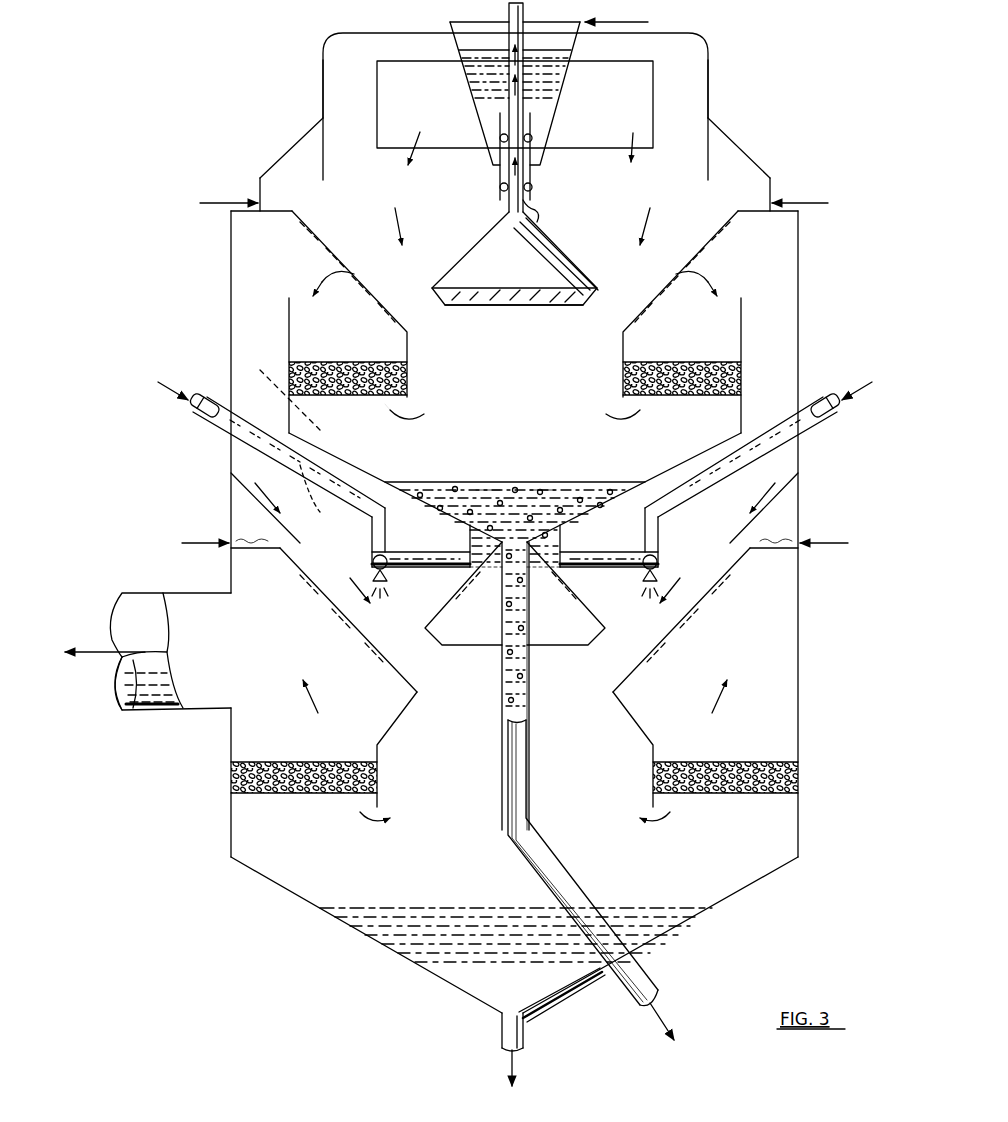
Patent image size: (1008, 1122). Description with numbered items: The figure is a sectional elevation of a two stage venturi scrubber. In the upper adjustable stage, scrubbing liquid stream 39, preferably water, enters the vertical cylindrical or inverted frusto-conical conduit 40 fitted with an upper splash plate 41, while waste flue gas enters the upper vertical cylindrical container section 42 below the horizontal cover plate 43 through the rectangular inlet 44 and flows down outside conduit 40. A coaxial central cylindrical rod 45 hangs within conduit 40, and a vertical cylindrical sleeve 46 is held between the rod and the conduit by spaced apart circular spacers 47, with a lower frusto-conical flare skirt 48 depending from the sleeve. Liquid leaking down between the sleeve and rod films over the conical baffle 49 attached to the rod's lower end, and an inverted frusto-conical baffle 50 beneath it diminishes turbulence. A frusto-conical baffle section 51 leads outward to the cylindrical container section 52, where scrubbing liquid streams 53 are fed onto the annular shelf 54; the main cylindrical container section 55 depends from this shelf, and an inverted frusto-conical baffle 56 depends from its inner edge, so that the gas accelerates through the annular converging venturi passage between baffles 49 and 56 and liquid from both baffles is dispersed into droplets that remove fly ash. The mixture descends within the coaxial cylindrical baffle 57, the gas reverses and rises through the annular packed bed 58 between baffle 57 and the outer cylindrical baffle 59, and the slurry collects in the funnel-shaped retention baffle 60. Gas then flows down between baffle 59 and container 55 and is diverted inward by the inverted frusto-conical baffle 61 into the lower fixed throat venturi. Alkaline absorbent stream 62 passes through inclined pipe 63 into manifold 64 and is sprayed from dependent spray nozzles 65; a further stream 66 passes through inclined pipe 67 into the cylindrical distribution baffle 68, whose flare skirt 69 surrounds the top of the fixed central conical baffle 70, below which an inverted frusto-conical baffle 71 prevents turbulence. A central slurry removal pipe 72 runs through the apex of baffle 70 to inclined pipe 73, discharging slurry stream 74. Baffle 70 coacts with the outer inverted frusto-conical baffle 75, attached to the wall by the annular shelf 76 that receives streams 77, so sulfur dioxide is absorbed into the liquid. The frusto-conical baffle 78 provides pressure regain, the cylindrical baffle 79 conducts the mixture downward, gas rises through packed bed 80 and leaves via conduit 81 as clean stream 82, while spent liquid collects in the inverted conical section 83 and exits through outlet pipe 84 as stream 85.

The scrubbing liquid stream 39 is at (624, 22).
The conduit 40 is at (462, 46).
The upper splash plate 41 is at (452, 20).
The upper vertical cylindrical container section 42 is at (323, 90).
The upper horizontal cover plate 43 is at (363, 33).
The rectangular inlet 44 is at (377, 97).
The central cylindrical rod 45 is at (524, 30).
The vertical cylindrical sleeve 46 is at (499, 172).
The circular spacers 47 is at (499, 132).
The lower frusto-conical flare skirt 48 is at (534, 202).
The conical baffle 49 is at (576, 268).
The inverted frusto-conical baffle 50 is at (584, 305).
The frusto-conical baffle section 51 is at (297, 146).
The vertical cylindrical container section 52 is at (260, 185).
The scrubbing liquid streams 53 is at (210, 204).
The circular horizontal annular shelf 54 is at (272, 212).
The main cylindrical container section 55 is at (231, 305).
The inverted frusto-conical baffle 56 is at (368, 284).
The coaxial cylindrical baffle 57 is at (407, 352).
The annular packed bed 58 is at (332, 395).
The outer vertical cylindrical baffle 59 is at (289, 345).
The retention baffle 60 is at (350, 464).
The inverted frusto-conical baffle 61 is at (289, 535).
The liquid solution or slurry stream 62 is at (154, 394).
The inclined pipe 63 is at (196, 411).
The manifold 64 is at (385, 552).
The spray nozzles 65 is at (372, 578).
The aqueous alkaline scrubbing stream 66 is at (858, 394).
The inclined pipe 67 is at (824, 414).
The vertical cylindrical distribution baffle 68 is at (470, 544).
The lower frusto-conical flare skirt 69 is at (456, 578).
The central conical baffle 70 is at (486, 574).
The inverted frusto-conical baffle 71 is at (576, 638).
The central slurry removal pipe 72 is at (529, 696).
The inclined pipe 73 is at (552, 853).
The slurry stream 74 is at (666, 1000).
The outer inverted frusto-conical baffle 75 is at (336, 608).
The horizontal annular circular shelf 76 is at (260, 550).
The scrubbing liquid solution or slurry streams 77 is at (192, 545).
The frusto-conical baffle 78 is at (392, 717).
The vertical cylindrical baffle 79 is at (378, 793).
The packed bed 80 is at (312, 794).
The conduit 81 is at (150, 713).
The scrubbed gas stream 82 is at (94, 658).
The lower inverted conical section 83 is at (292, 890).
The outlet pipe 84 is at (532, 1022).
The spent scrubbing liquid stream 85 is at (504, 1057).